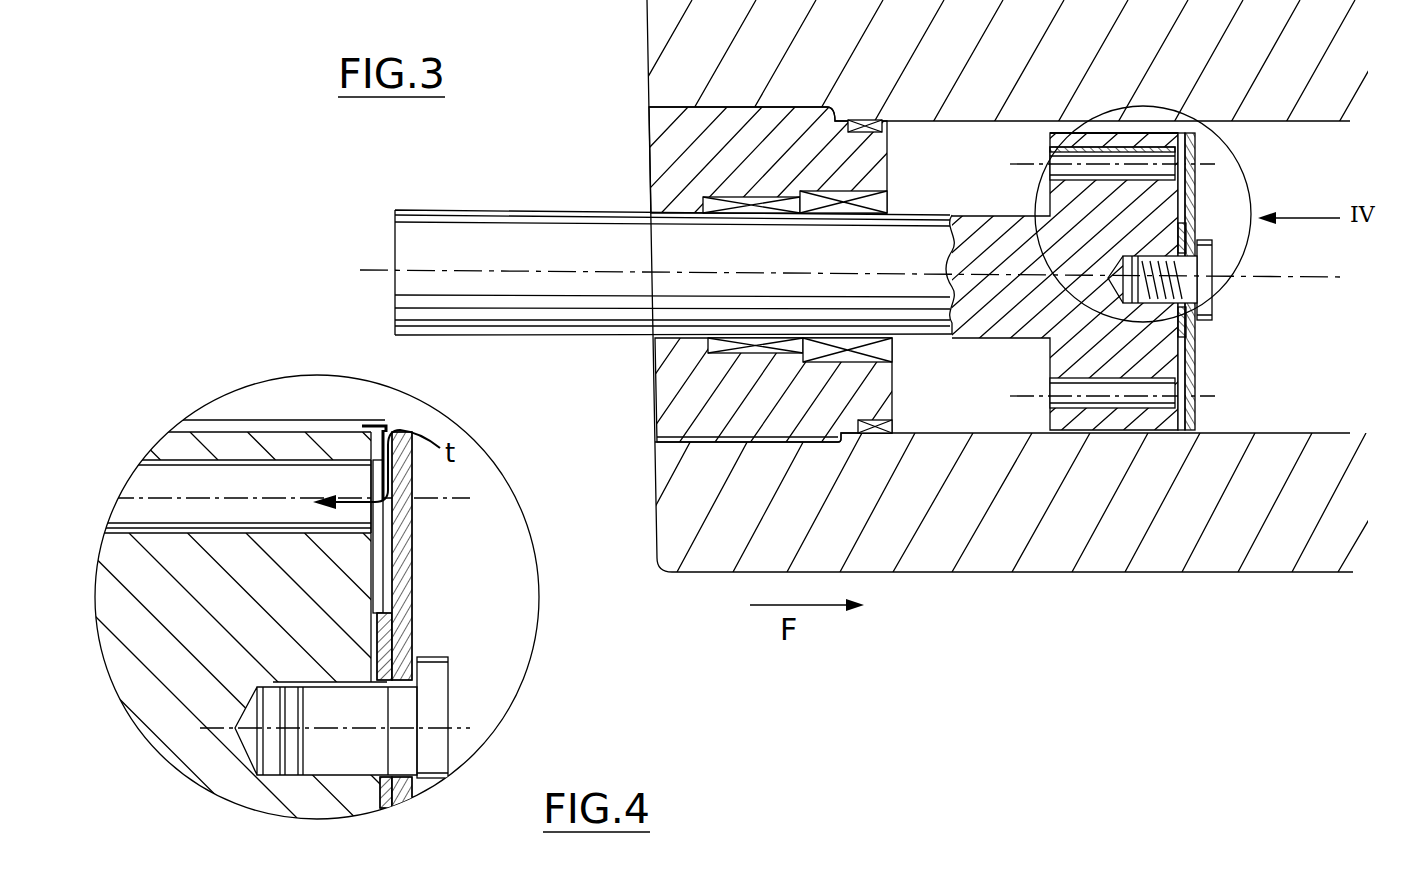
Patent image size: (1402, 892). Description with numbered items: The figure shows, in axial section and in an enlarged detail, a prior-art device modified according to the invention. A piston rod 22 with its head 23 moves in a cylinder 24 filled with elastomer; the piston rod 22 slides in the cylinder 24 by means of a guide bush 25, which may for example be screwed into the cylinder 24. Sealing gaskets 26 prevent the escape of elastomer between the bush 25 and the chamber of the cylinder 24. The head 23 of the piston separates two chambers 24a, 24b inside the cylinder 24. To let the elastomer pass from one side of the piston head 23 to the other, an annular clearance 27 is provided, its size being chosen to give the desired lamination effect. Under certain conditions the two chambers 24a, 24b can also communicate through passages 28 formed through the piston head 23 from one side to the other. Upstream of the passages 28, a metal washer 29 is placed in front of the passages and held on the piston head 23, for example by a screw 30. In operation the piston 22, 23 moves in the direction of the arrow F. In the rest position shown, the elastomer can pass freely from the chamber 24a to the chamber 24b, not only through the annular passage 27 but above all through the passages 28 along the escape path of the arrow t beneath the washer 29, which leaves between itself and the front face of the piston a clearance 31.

In FIG. 3, the piston rod 22 is at (542, 250).
In FIG. 3, the piston head 23 is at (1093, 347).
In FIG. 4, the piston head 23 is at (324, 625).
In FIG. 3, the cylinder 24 is at (1080, 525).
In FIG. 4, the cylinder 24 is at (240, 406).
In FIG. 3, the chamber 24a is at (1272, 349).
In FIG. 3, the chamber 24b is at (947, 409).
In FIG. 3, the guide bush 25 is at (655, 140).
In FIG. 3, the sealing gaskets 26 is at (855, 130).
In FIG. 3, the annular clearance 27 is at (1143, 130).
In FIG. 4, the annular clearance 27 is at (378, 424).
In FIG. 3, the passages 28 is at (1045, 172).
In FIG. 4, the passages 28 is at (282, 496).
In FIG. 3, the metal washer 29 is at (1197, 180).
In FIG. 4, the metal washer 29 is at (413, 567).
In FIG. 3, the screw 30 is at (1160, 280).
In FIG. 4, the screw 30 is at (433, 700).
In FIG. 3, the clearance 31 is at (1182, 281).
In FIG. 4, the clearance 31 is at (408, 518).